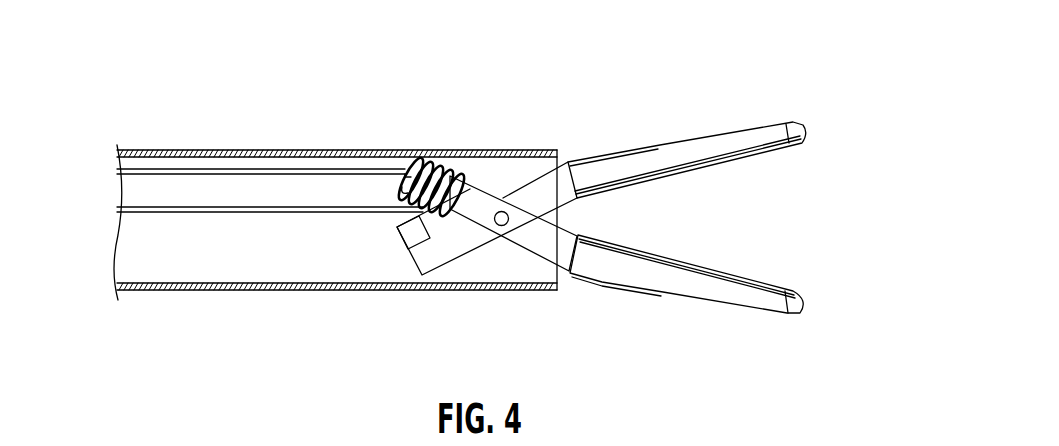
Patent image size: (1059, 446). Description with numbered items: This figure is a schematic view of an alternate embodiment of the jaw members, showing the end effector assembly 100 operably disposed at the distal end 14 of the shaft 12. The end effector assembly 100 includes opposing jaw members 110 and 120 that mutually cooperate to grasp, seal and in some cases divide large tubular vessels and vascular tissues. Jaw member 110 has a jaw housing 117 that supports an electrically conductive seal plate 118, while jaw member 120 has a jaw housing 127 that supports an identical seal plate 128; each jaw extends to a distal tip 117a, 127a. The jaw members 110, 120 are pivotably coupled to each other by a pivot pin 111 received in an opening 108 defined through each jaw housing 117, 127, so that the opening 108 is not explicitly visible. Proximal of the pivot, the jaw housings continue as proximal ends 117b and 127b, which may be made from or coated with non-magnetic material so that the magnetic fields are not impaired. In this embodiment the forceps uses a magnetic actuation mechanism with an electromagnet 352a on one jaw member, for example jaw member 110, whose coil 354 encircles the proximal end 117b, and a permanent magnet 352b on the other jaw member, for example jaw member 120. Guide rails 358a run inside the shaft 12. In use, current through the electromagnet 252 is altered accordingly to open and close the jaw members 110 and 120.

The end effector assembly 100 is at (580, 204).
The shaft 12 is at (292, 150).
The distal end 14 is at (497, 150).
The opening 108 is at (503, 195).
The jaw member 110 is at (820, 302).
The pivot pin 111 is at (502, 227).
The jaw housing 117 is at (736, 293).
The distal tip of second jaw arm 117a is at (797, 312).
The proximal end 117b is at (477, 185).
The seal plate 118 is at (700, 263).
The jaw member 120 is at (820, 130).
The jaw housing 127 is at (735, 150).
The distal tip of first jaw arm 127a is at (777, 129).
The proximal end 127b is at (457, 260).
The seal plate 128 is at (697, 175).
The electromagnet 252 is at (366, 236).
The electromagnet 352a is at (416, 146).
The permanent magnet 352b is at (397, 230).
The coil spring 354 is at (440, 158).
The guide rails 358a is at (226, 169).